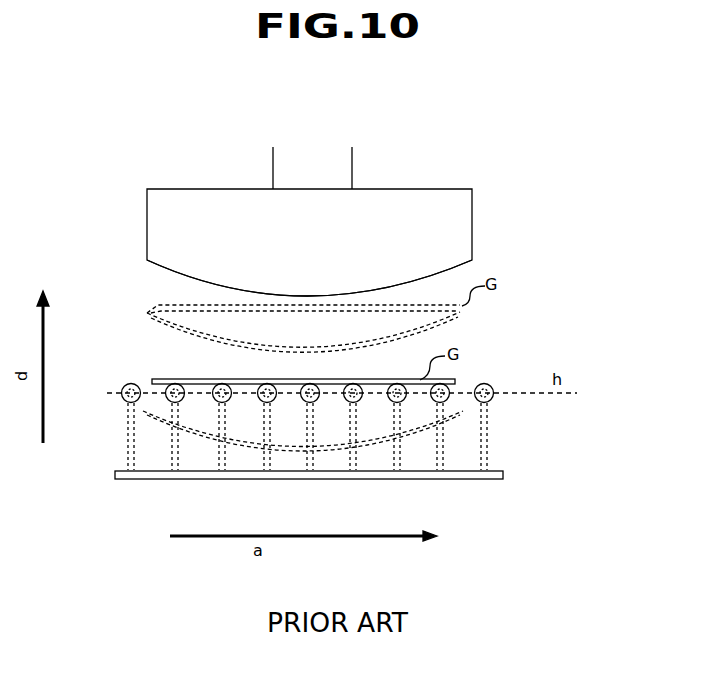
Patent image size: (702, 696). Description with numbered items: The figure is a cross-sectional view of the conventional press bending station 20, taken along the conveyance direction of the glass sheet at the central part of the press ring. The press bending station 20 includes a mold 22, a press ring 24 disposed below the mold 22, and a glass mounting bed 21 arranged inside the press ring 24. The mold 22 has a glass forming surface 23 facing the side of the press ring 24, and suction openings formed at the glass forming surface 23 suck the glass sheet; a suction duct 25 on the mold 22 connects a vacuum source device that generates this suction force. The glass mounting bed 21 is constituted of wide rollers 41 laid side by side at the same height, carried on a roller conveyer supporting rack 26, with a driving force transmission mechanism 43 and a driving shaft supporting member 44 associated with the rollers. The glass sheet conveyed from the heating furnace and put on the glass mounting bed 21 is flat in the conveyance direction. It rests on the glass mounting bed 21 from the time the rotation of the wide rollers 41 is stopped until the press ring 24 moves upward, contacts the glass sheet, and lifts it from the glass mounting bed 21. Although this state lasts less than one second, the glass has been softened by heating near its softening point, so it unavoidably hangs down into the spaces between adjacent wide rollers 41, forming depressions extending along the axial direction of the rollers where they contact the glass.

The press bending station 20 is at (416, 136).
The glass mounting bed 21 is at (502, 374).
The mold 22 is at (438, 188).
The glass forming surface 23 is at (472, 262).
The press ring 24 is at (466, 316).
The suction duct 25 is at (353, 168).
The roller conveyer supporting rack 26 is at (503, 472).
The wide roller 41 is at (127, 402).
The driving force transmission mechanism 43 is at (310, 460).
The driving shaft supporting member 44 is at (500, 494).